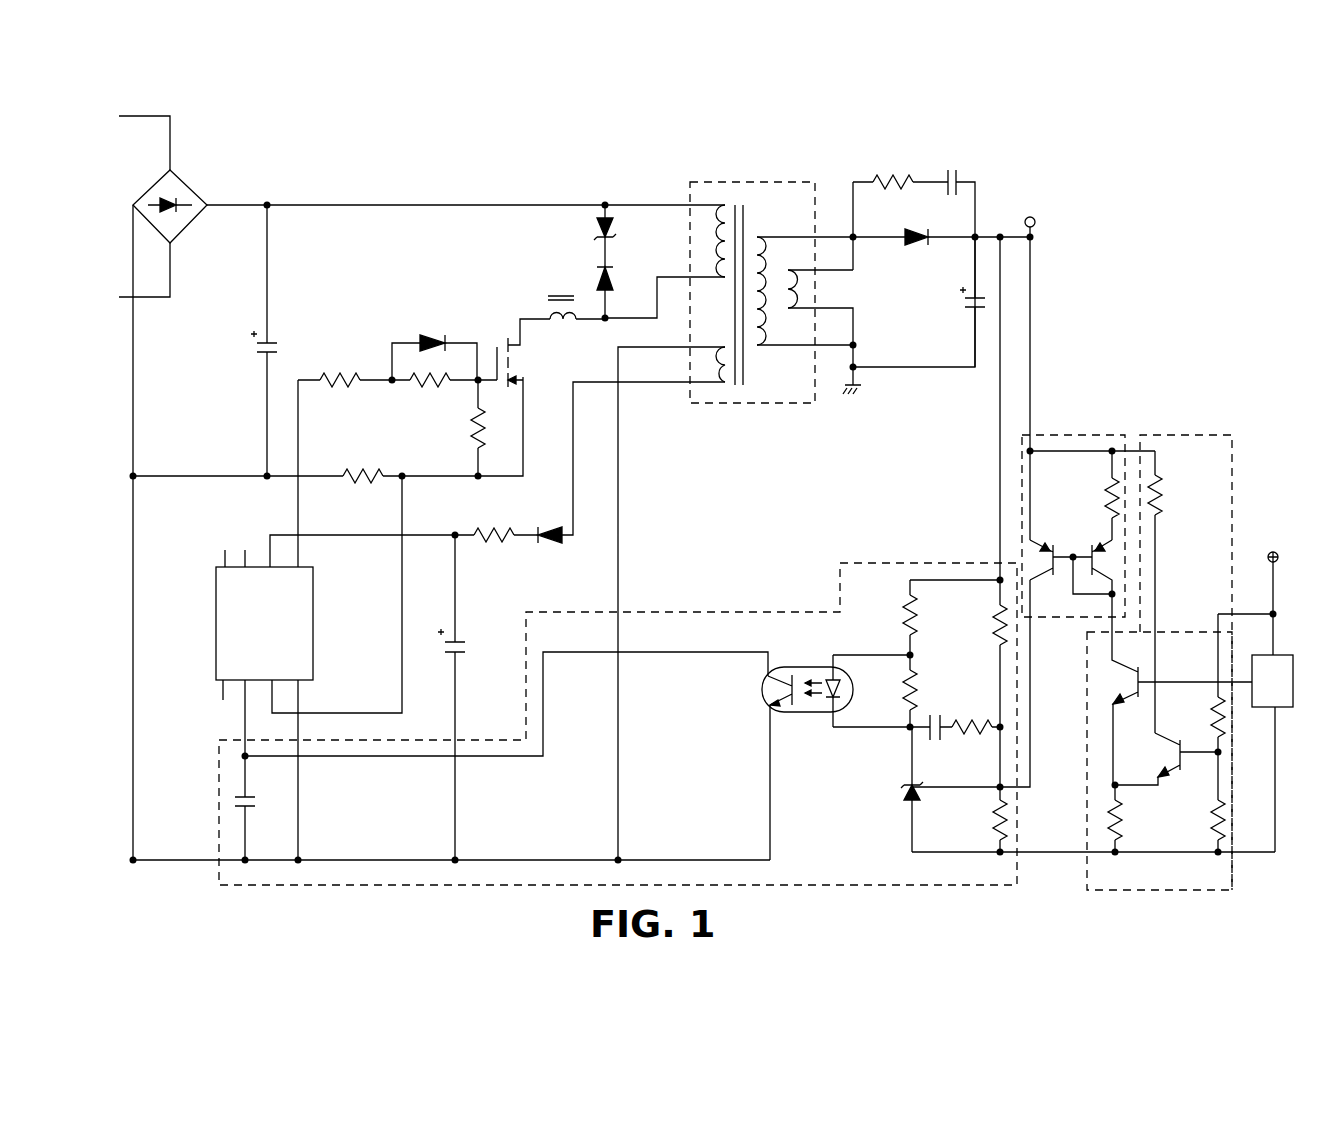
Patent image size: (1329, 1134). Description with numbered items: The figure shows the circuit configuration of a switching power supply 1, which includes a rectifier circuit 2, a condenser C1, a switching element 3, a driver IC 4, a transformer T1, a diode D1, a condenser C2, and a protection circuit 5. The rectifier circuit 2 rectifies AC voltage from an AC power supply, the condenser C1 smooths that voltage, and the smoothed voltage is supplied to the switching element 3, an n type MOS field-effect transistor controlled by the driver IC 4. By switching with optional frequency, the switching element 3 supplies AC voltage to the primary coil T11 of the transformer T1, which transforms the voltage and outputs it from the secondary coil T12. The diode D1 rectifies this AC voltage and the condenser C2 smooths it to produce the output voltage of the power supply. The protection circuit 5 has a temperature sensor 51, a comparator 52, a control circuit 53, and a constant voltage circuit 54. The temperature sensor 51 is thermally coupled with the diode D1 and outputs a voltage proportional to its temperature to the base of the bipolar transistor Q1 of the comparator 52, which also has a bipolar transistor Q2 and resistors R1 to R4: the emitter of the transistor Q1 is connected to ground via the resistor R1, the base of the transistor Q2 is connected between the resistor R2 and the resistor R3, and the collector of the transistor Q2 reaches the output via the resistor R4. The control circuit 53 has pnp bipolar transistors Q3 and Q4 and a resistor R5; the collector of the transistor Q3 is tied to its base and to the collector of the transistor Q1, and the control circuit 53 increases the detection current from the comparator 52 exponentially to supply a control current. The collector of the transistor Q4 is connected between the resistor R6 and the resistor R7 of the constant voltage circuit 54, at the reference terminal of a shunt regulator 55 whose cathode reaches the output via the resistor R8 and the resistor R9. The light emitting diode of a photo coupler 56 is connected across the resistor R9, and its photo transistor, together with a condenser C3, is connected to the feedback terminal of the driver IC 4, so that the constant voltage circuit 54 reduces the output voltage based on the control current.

The switching power supply 1 is at (1085, 152).
The rectifier circuit 2 is at (147, 187).
The switching element 3 is at (488, 316).
The driver IC 4 is at (214, 620).
The protection circuit 5 is at (1246, 408).
The temperature sensor 51 is at (1290, 710).
The comparator 52 is at (1159, 789).
The control circuit 53 is at (1088, 490).
The constant voltage circuit 54 is at (803, 610).
The shunt regulator 55 is at (904, 793).
The photo coupler 56 is at (808, 715).
The transformer T1 is at (740, 256).
The primary coil T11 is at (673, 188).
The secondary coil T12 is at (833, 192).
The condenser C1 is at (275, 340).
The condenser C2 is at (967, 302).
The condenser C3 is at (255, 811).
The diode D1 is at (941, 249).
The first resistor R1 is at (1127, 818).
The second resistor R2 is at (1204, 683).
The third resistor R3 is at (1202, 802).
The fourth resistor R4 is at (1168, 592).
The resistor R5 is at (1095, 495).
The sixth resistor R6 is at (986, 512).
The seventh resistor R7 is at (986, 819).
The eighth resistor R8 is at (894, 617).
The ninth resistor R9 is at (894, 691).
The first bipolar transistor Q1 is at (1182, 689).
The second bipolar transistor Q2 is at (1166, 759).
The third bipolar transistor Q3 is at (1094, 558).
The fourth bipolar transistor Q4 is at (1043, 551).